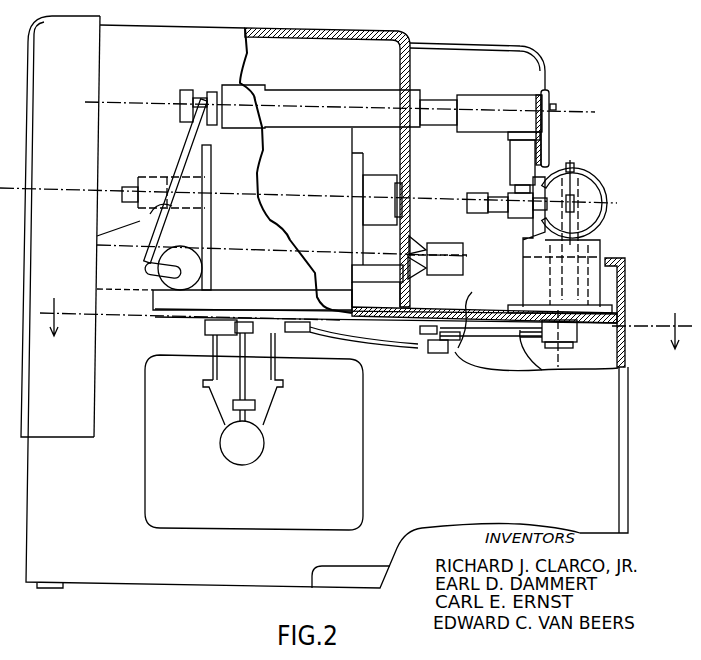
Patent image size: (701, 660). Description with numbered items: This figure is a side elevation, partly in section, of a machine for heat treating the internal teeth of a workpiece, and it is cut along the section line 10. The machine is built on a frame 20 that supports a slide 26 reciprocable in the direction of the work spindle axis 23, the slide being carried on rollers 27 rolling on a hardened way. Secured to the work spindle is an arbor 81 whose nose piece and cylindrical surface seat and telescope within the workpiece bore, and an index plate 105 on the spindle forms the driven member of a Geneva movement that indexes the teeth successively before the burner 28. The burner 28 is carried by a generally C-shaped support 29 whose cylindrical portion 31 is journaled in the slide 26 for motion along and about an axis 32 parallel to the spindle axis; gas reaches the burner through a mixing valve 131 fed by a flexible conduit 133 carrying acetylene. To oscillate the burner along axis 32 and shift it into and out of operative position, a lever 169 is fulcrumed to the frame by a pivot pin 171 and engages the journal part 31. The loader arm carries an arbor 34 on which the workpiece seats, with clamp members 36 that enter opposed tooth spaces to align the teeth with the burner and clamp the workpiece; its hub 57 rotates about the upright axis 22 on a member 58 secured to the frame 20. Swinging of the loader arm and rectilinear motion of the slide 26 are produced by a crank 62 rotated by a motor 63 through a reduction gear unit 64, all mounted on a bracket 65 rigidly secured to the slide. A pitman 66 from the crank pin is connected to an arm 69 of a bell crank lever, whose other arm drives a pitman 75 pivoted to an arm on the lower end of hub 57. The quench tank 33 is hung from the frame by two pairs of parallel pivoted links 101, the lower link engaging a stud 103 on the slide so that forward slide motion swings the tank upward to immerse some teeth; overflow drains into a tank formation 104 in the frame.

The section line 10 is at (366, 334).
The frame 20 is at (362, 348).
The upright axis 22 is at (563, 269).
The work spindle axis 23 is at (302, 197).
The slide 26 is at (333, 240).
The rollers 27 is at (352, 299).
The burner 28 is at (470, 214).
The C-shaped support 29 is at (520, 157).
The cylindrical portion 31 is at (432, 106).
The axis 32 is at (268, 105).
The tank 33 is at (455, 268).
The arbor 34 is at (607, 199).
The clamp members 36 is at (572, 167).
The hub 57 is at (590, 244).
The member 58 is at (615, 303).
The crank 62 is at (284, 333).
The motor 63 is at (263, 430).
The reduction gear unit 64 is at (244, 371).
The bracket 65 is at (205, 326).
The pitman 66 is at (395, 345).
The arm 69 is at (434, 348).
The pitman 75 is at (542, 373).
The arbor 81 is at (371, 173).
The pivoted links 101 is at (419, 264).
The stud 103 is at (360, 270).
The tank formation 104 is at (458, 350).
The index plate 105 is at (211, 165).
The mixing valve 131 is at (552, 136).
The flexible conduit 133 is at (522, 46).
The lever 169 is at (172, 172).
The pivot pin 171 is at (167, 210).